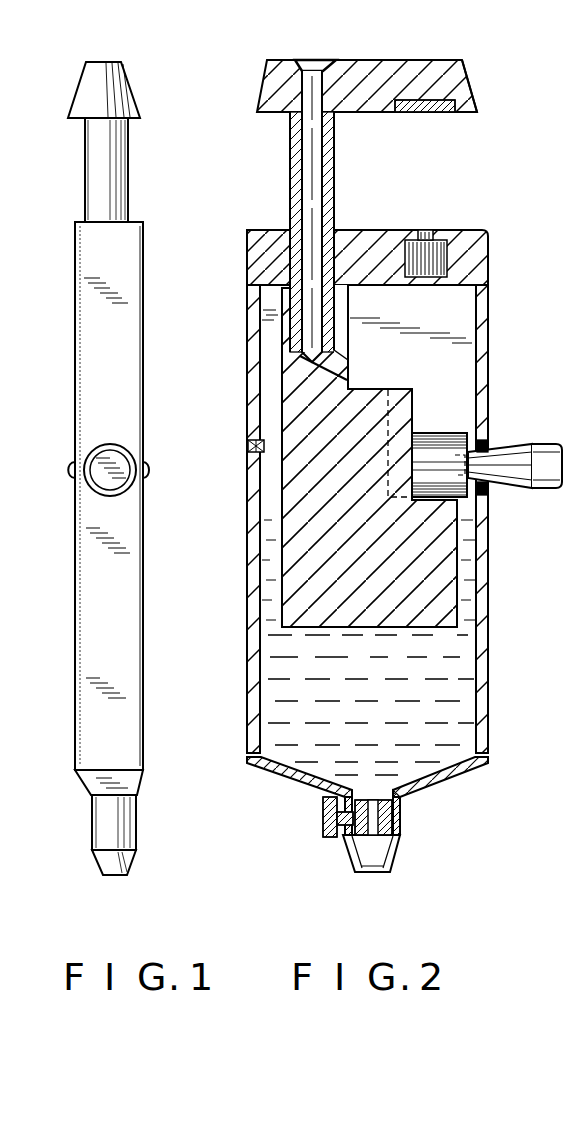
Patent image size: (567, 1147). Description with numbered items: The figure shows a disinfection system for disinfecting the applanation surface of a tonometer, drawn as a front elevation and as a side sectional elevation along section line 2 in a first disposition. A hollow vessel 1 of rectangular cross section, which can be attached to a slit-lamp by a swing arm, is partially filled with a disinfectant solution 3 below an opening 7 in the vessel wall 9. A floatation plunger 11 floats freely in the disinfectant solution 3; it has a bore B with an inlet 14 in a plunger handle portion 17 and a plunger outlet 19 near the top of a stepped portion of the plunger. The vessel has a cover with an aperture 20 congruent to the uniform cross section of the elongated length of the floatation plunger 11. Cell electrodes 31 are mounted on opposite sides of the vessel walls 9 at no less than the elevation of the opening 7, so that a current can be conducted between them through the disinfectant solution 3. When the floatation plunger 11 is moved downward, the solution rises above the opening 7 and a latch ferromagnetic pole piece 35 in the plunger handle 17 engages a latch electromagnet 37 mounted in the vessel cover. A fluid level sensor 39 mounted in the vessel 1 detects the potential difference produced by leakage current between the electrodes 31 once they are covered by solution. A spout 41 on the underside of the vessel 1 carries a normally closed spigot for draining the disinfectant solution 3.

In FIG. 1, the hollow vessel 1 is at (146, 600).
In FIG. 1, the section line of FIG. 2 is at (102, 4).
In FIG. 2, the disinfectant solution 3 is at (285, 703).
In FIG. 2, the opening 7 is at (480, 442).
In FIG. 2, the vessel wall 9 is at (490, 361).
In FIG. 2, the floatation plunger 11 is at (372, 60).
In FIG. 2, the inlet 14 is at (312, 62).
In FIG. 2, the plunger handle portion 17 is at (455, 100).
In FIG. 2, the plunger outlet 19 is at (352, 230).
In FIG. 2, the aperture 20 is at (290, 226).
In FIG. 1, the cell electrodes 31 is at (68, 464).
In FIG. 2, the latch ferromagnetic pole piece 35 is at (423, 113).
In FIG. 2, the latch electromagnet 37 is at (425, 228).
In FIG. 2, the fluid level sensor 39 is at (562, 432).
In FIG. 2, the spout 41 is at (400, 840).
In FIG. 2, the bore B is at (310, 168).